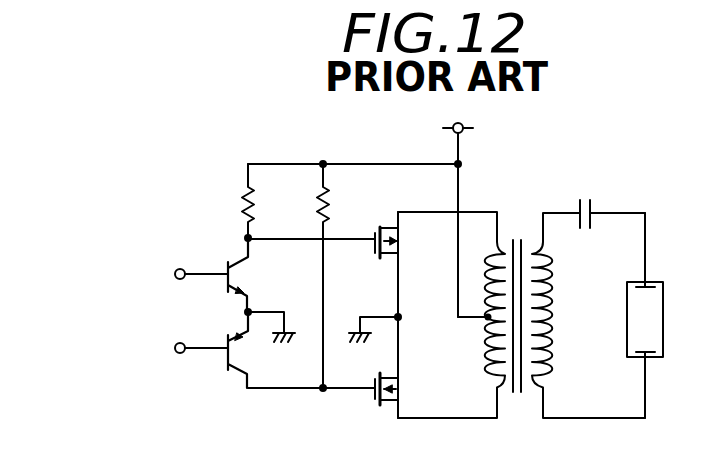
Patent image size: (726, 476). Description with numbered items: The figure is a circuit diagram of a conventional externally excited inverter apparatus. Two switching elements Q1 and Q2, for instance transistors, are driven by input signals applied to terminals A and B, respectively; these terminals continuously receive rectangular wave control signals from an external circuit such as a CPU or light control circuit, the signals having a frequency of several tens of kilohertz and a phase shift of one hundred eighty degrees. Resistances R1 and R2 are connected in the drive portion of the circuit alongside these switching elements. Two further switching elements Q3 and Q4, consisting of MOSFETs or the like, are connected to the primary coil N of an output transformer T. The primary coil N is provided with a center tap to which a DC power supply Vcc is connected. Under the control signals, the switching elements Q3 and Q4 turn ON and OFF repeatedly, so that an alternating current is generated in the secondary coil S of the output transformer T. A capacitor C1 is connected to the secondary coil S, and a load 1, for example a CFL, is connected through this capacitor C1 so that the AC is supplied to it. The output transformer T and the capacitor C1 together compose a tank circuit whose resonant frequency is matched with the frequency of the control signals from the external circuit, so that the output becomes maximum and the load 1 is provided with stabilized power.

The load 1 is at (650, 284).
The capacitor C1 is at (591, 199).
The output transformer T is at (517, 227).
The primary coil N is at (488, 348).
The secondary coil S is at (547, 332).
The switching element Q1 is at (258, 276).
The switching element Q2 is at (258, 350).
The switching element Q3 is at (411, 244).
The switching element Q4 is at (411, 393).
The resistance R1 is at (269, 202).
The resistance R2 is at (344, 277).
The DC power supply Vcc is at (473, 207).
The terminal A is at (123, 275).
The terminal B is at (123, 349).